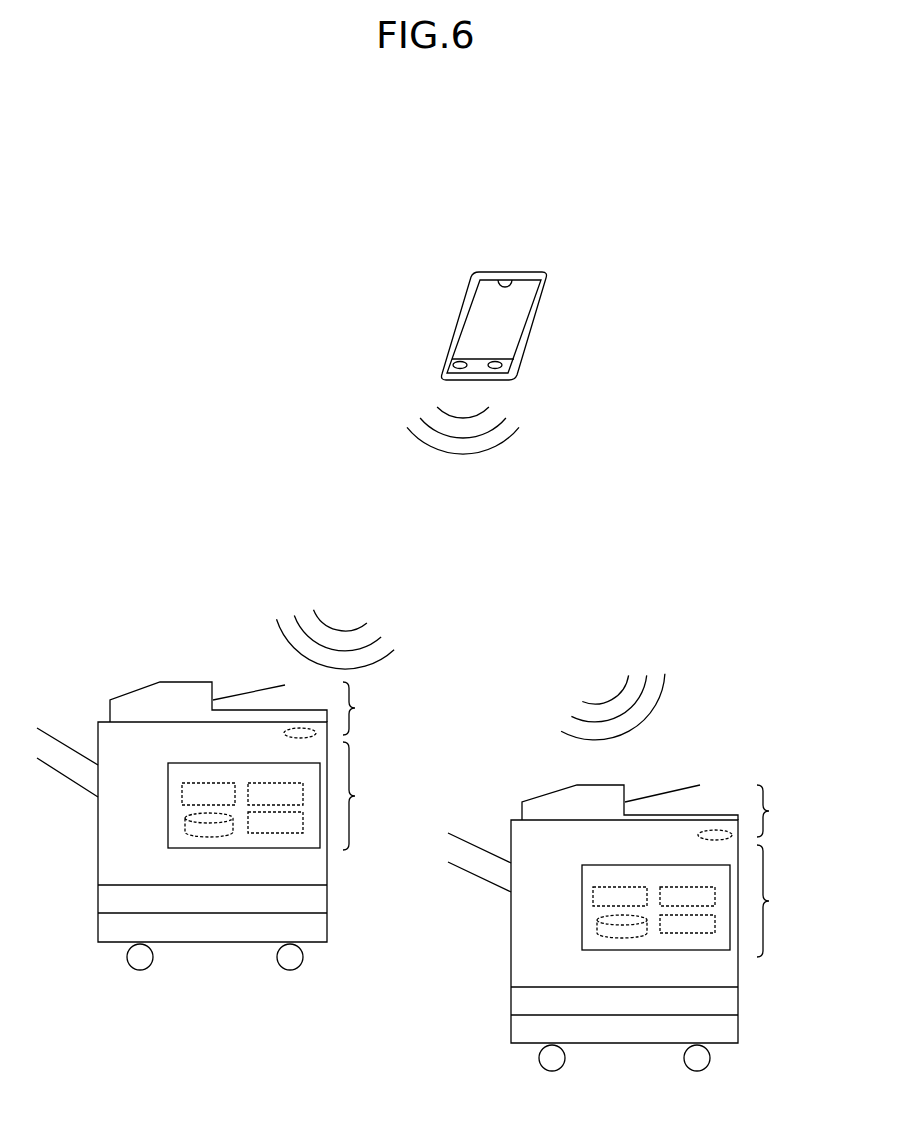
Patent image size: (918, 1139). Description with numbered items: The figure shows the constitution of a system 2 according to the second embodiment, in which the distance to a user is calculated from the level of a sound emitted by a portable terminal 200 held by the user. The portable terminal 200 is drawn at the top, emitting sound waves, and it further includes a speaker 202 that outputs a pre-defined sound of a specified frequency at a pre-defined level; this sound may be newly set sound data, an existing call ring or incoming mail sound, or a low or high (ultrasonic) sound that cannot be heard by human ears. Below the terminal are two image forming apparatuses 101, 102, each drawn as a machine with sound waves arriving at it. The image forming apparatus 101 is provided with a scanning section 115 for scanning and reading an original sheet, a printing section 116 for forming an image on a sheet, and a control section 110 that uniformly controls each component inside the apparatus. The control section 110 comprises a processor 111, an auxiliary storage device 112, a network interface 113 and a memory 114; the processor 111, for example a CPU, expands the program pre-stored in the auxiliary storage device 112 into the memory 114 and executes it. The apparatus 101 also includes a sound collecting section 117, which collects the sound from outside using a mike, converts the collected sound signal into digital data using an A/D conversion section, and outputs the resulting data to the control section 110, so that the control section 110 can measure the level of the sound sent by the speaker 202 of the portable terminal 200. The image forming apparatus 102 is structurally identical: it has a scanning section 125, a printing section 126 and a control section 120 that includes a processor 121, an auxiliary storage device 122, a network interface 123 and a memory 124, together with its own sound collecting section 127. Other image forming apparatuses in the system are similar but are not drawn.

The system 2 is at (718, 285).
The portable terminal 200 is at (475, 341).
The speaker 202 is at (505, 274).
The image forming apparatus 101 is at (216, 790).
The image forming apparatus 102 is at (626, 872).
The control section 110 is at (215, 811).
The processor 111 is at (283, 786).
The auxiliary storage device 112 is at (208, 840).
The network interface 113 is at (278, 835).
The memory 114 is at (218, 785).
The scanning section 115 is at (369, 708).
The printing section 116 is at (369, 796).
The sound collecting section 117 is at (300, 727).
The control section 120 is at (627, 913).
The processor 121 is at (697, 887).
The auxiliary storage device 122 is at (618, 940).
The network interface 123 is at (688, 933).
The memory 124 is at (625, 887).
The scanning section 125 is at (781, 811).
The printing section 126 is at (781, 901).
The sound collecting section 127 is at (714, 830).